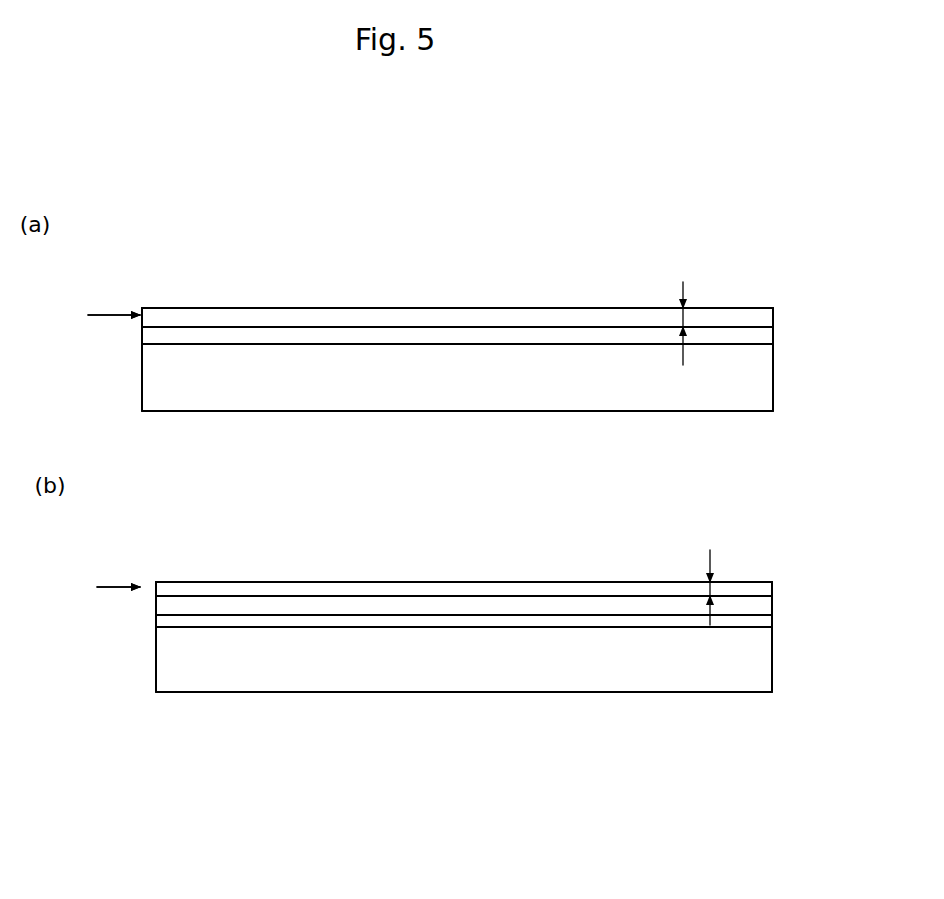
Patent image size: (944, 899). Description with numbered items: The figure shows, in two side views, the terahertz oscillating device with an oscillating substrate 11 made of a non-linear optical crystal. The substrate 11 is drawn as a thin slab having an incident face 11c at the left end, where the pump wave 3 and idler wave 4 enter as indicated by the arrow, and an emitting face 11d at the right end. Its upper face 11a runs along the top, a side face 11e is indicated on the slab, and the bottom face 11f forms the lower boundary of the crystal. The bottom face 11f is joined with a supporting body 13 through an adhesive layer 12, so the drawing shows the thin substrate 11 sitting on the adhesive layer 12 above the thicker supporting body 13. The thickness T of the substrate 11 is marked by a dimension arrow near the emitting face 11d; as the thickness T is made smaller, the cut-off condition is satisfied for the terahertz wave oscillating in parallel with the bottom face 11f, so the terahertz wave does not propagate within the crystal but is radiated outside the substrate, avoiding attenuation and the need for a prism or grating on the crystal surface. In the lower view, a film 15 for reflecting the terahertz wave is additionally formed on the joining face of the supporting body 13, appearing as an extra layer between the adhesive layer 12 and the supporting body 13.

The pump wave 3 is at (107, 315).
The idler wave 4 is at (114, 451).
The oscillating substrate 11 is at (423, 315).
The upper face 11a is at (338, 309).
The incident face 11c is at (140, 310).
The emitting face 11d is at (773, 316).
The side face 11e is at (473, 319).
The bottom face 11f is at (590, 328).
The adhesive layer 12 is at (150, 333).
The supporting body 13 is at (155, 390).
The film 15 is at (182, 622).
The thickness T is at (684, 320).